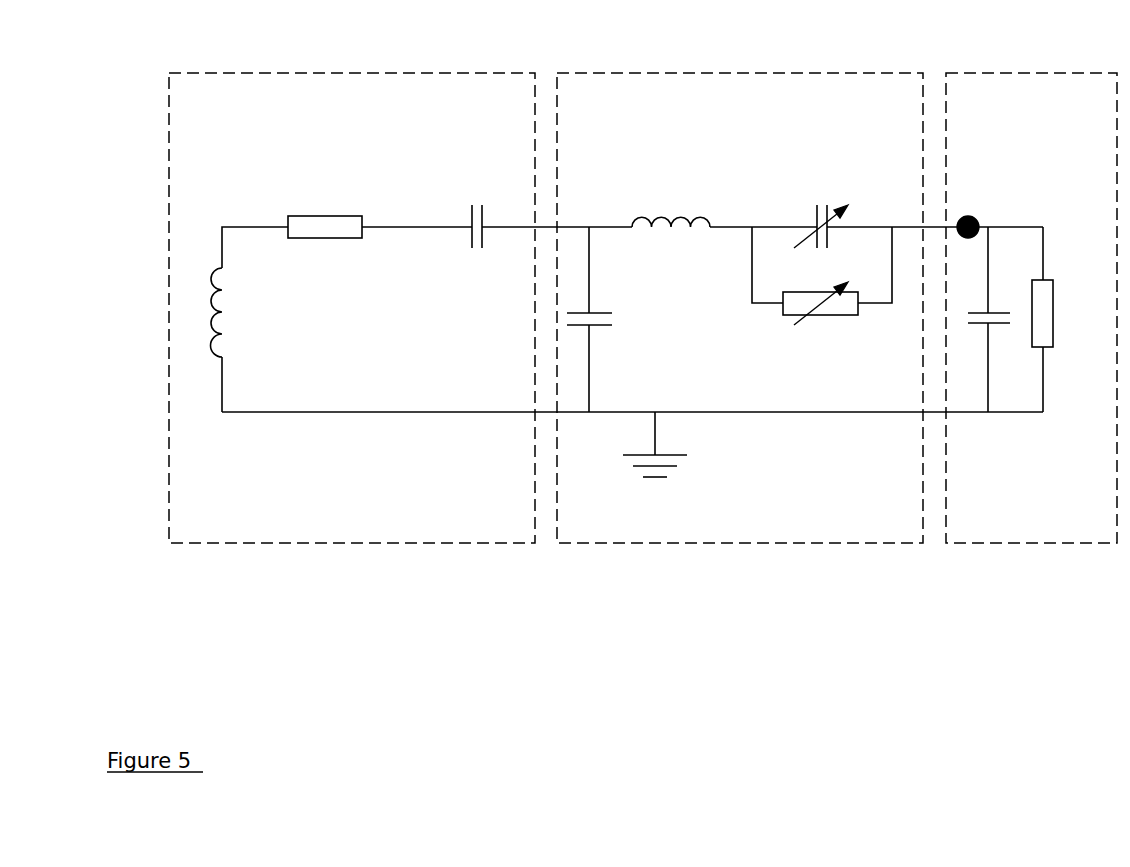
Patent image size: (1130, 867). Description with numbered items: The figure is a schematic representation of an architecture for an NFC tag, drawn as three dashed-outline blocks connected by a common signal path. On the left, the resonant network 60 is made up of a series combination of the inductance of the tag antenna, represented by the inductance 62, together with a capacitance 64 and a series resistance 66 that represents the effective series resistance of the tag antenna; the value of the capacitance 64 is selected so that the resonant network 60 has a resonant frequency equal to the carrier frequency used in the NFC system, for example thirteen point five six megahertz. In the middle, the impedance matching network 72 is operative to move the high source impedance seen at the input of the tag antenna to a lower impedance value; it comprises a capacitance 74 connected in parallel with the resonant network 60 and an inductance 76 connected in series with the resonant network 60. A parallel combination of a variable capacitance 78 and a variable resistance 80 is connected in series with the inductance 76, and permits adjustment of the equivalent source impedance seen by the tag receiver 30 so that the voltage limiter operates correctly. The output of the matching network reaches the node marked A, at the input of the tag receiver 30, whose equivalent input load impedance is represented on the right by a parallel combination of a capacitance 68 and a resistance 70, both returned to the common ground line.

The resonant network 60 is at (222, 73).
The impedance matching network 72 is at (598, 73).
The tag receiver 30 is at (998, 73).
The inductance 62 is at (225, 345).
The series resistance 66 is at (340, 226).
The capacitance 64 is at (481, 206).
The capacitance 74 is at (602, 326).
The inductance 76 is at (698, 212).
The variable capacitance 78 is at (827, 207).
The variable resistance 80 is at (848, 301).
The node A is at (984, 207).
The capacitance 68 is at (998, 312).
The resistance 70 is at (1043, 322).